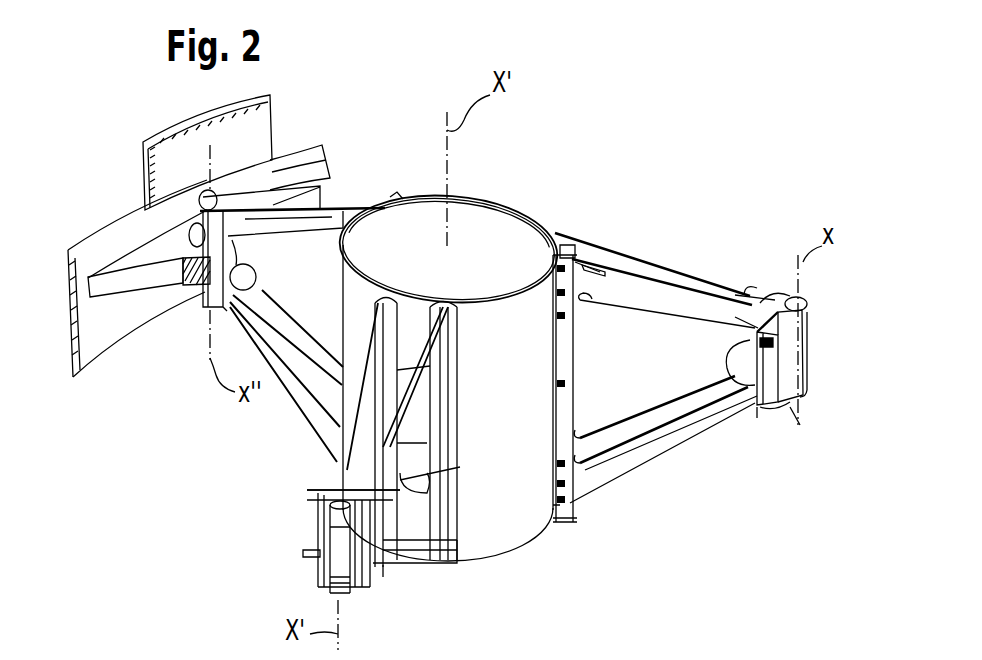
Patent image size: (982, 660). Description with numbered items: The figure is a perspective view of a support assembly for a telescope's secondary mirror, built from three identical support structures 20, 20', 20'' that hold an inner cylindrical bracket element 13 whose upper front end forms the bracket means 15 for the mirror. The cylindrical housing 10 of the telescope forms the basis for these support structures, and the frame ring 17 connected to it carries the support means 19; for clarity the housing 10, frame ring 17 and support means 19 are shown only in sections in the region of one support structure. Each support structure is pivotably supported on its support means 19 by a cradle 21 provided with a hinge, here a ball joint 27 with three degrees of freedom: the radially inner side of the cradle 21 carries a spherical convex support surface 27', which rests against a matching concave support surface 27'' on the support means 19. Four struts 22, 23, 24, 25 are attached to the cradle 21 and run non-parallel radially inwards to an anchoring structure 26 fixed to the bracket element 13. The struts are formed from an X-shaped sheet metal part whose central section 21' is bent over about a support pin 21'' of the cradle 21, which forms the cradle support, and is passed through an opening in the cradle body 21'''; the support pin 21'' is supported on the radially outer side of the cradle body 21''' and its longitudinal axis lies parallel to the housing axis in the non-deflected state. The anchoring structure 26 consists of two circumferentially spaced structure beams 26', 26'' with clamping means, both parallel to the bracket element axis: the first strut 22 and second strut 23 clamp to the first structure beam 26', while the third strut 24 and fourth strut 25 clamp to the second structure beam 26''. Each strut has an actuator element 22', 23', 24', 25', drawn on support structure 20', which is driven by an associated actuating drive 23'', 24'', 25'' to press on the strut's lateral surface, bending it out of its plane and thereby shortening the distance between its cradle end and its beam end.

The housing 10 is at (146, 172).
The inner cylindrical bracket element 13 is at (527, 530).
The bracket means 15 is at (518, 205).
The frame ring 17 is at (145, 307).
The support means 19 is at (173, 287).
The support structure 20 is at (635, 217).
The support structure 20' is at (400, 472).
The support structure 20'' is at (301, 274).
The cradle 21 is at (769, 287).
The central section 21' is at (835, 357).
The support pin 21'' is at (827, 281).
The cradle body 21''' is at (809, 460).
The first strut 22 is at (653, 234).
The actuator element 22' is at (578, 343).
The second strut 23 is at (661, 405).
The actuator element 23' is at (391, 612).
The actuating drive 23'' is at (696, 344).
The third strut 24 is at (663, 463).
The actuator element 24' is at (298, 547).
The actuating drive 24'' is at (762, 450).
The fourth strut 25 is at (667, 271).
The actuator element 25' is at (321, 464).
The actuating drive 25'' is at (816, 326).
The anchoring structure 26 is at (595, 388).
The first structure beam 26' is at (582, 204).
The second structure beam 26'' is at (605, 525).
The ball joint 27 is at (727, 410).
The convex support surface 27' is at (809, 432).
The concave support surface 27'' is at (221, 217).